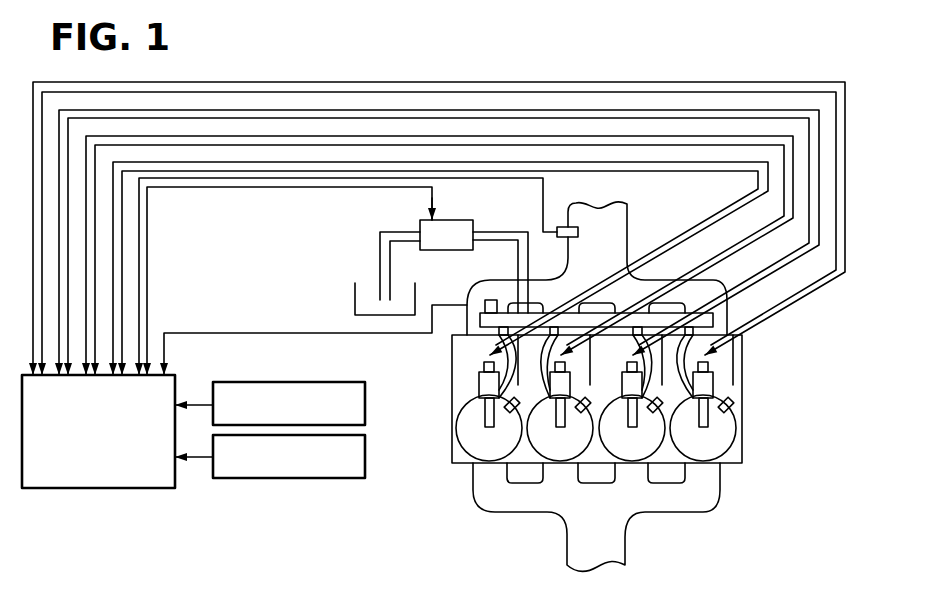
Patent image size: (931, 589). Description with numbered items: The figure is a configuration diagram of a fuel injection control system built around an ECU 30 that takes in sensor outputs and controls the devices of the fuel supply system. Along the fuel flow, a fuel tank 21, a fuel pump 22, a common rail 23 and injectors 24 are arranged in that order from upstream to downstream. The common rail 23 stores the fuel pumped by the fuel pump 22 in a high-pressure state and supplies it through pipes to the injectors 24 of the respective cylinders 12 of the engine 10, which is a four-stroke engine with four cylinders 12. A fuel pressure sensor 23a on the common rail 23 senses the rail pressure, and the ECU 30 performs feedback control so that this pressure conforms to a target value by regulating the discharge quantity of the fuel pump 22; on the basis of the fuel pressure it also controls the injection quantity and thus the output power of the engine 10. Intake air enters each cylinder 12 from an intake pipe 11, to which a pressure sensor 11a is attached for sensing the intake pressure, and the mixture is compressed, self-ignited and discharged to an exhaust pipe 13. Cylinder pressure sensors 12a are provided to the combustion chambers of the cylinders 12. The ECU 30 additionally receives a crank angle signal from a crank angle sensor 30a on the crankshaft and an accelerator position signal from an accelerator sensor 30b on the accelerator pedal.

The engine 10 is at (750, 377).
The intake pipe 11 is at (627, 218).
The pressure sensor 11a is at (562, 227).
The cylinders 12 is at (716, 450).
The cylinder pressure sensors 12a is at (734, 412).
The exhaust pipe 13 is at (625, 548).
The fuel tank 21 is at (355, 297).
The fuel pump 22 is at (420, 224).
The common rail 23 is at (716, 324).
The fuel pressure sensor 23a is at (489, 300).
The injectors 24 is at (713, 386).
The ECU 30 is at (196, 373).
The crank angle sensor 30a is at (366, 405).
The accelerator sensor 30b is at (366, 457).